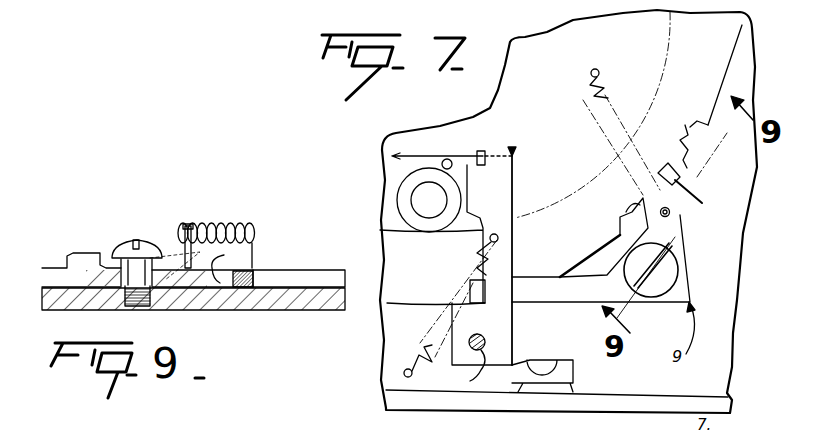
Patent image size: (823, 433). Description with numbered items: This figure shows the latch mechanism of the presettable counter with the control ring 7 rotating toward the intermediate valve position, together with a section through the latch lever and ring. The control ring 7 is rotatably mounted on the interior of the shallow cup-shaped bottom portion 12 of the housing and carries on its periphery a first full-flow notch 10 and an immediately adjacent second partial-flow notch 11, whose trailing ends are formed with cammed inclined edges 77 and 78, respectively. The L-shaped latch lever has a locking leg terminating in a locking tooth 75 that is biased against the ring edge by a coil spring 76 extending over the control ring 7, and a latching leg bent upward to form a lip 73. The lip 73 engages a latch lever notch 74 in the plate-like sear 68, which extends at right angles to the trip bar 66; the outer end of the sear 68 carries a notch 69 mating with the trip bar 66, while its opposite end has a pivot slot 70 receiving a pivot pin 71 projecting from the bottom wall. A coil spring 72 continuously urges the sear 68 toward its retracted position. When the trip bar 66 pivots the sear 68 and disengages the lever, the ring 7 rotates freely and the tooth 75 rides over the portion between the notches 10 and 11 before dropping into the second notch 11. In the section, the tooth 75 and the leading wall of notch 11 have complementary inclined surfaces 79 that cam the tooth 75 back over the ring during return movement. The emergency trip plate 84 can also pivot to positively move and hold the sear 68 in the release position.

In FIG. 7, the control ring 7 is at (728, 45).
In FIG. 9, the control ring 7 is at (337, 268).
In FIG. 7, the first full-flow notch 10 is at (690, 125).
In FIG. 9, the first full-flow notch 10 is at (308, 270).
In FIG. 7, the second partial-flow notch 11 is at (630, 211).
In FIG. 9, the second partial-flow notch 11 is at (224, 261).
In FIG. 7, the bottom portion 12 is at (405, 400).
In FIG. 9, the bottom portion 12 is at (300, 311).
In FIG. 7, the trip bar 66 is at (392, 157).
In FIG. 7, the sear 68 is at (512, 147).
In FIG. 7, the notch 69 is at (481, 152).
In FIG. 7, the pivot slot 70 is at (471, 382).
In FIG. 7, the pivot pin 71 is at (487, 341).
In FIG. 7, the coil spring 72 is at (403, 362).
In FIG. 7, the lip 73 is at (470, 290).
In FIG. 7, the latch lever notch 74 is at (490, 272).
In FIG. 7, the locking tooth 75 is at (648, 193).
In FIG. 9, the locking tooth 75 is at (185, 285).
In FIG. 7, the coil spring 76 is at (580, 88).
In FIG. 9, the coil spring 76 is at (216, 225).
In FIG. 7, the cammed inclined edge 77 is at (618, 217).
In FIG. 7, the cammed inclined edge 78 is at (683, 143).
In FIG. 9, the cammed inclined edge 78 is at (265, 274).
In FIG. 7, the inclined surfaces 79 is at (668, 210).
In FIG. 9, the inclined surfaces 79 is at (205, 287).
In FIG. 7, the emergency trip plate 84 is at (575, 368).